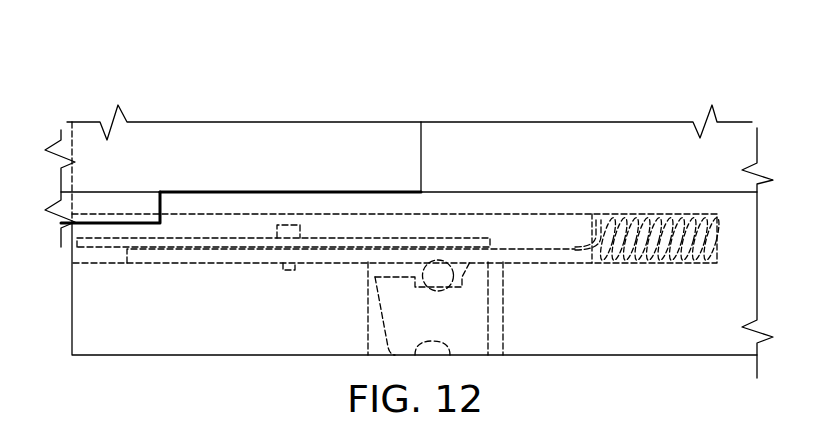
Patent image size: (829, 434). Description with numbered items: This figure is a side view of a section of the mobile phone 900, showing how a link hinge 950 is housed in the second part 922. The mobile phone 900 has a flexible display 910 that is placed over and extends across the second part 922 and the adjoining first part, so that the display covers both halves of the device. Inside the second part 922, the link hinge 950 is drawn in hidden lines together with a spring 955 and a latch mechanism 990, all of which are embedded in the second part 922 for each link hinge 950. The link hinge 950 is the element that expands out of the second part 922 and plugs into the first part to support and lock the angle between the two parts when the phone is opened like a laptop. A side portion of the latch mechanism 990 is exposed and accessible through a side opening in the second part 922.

The mobile phone 900 is at (305, 76).
The flexible display 910 is at (247, 170).
The second part 922 is at (203, 355).
The link hinge 950 is at (440, 236).
The spring 955 is at (610, 262).
The latch mechanism 990 is at (488, 308).